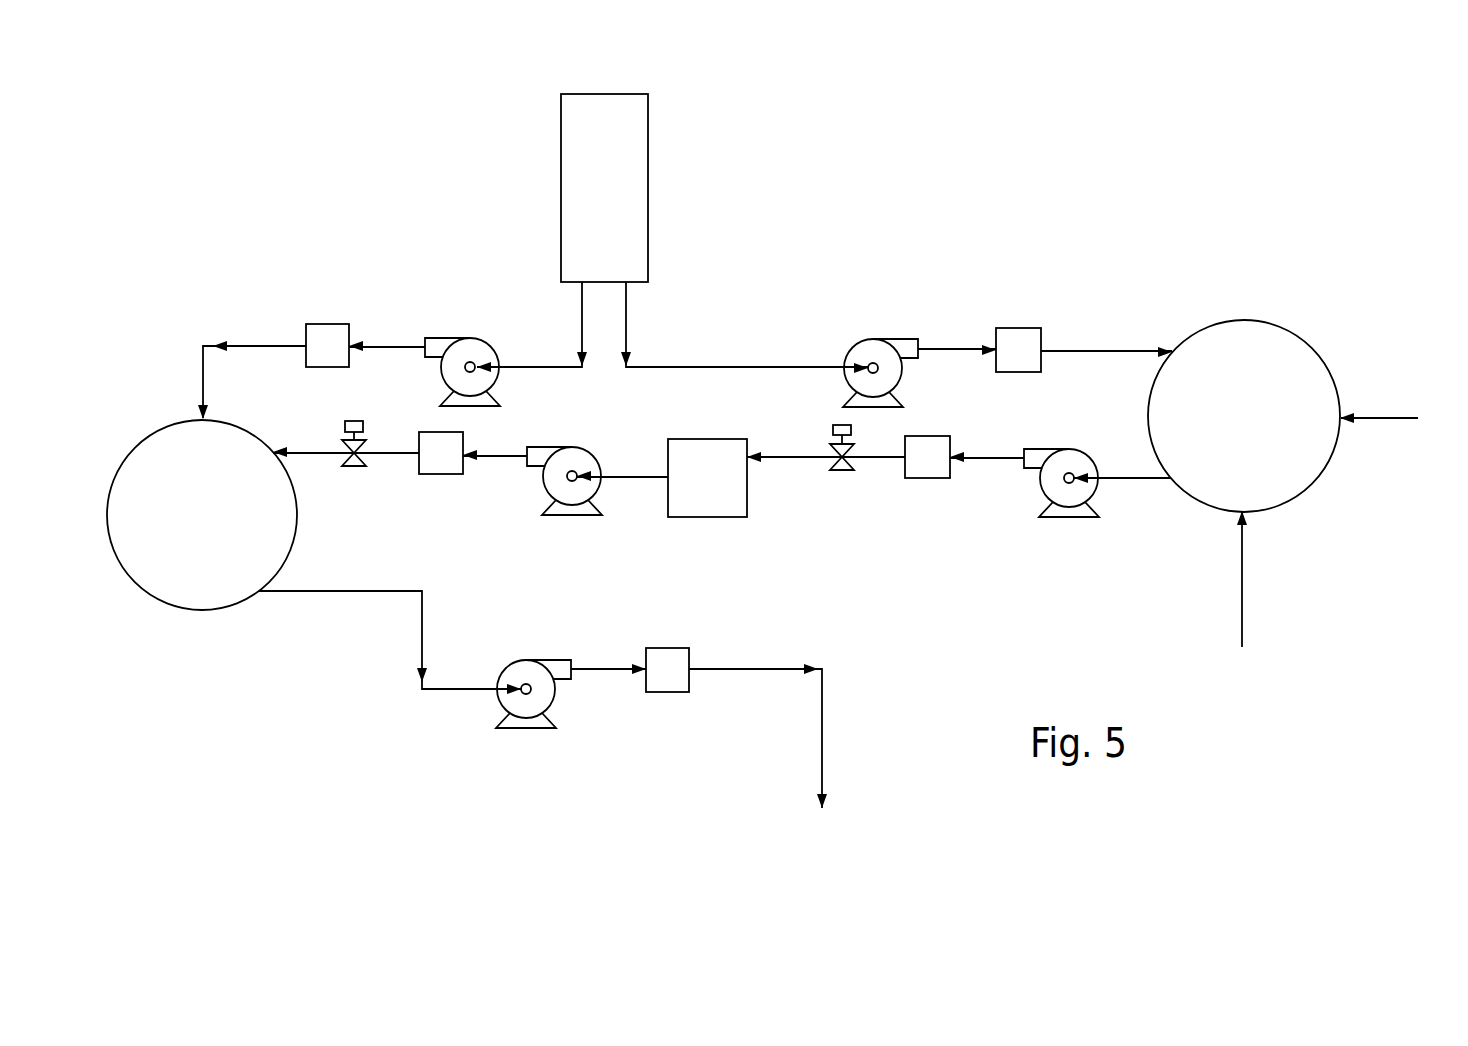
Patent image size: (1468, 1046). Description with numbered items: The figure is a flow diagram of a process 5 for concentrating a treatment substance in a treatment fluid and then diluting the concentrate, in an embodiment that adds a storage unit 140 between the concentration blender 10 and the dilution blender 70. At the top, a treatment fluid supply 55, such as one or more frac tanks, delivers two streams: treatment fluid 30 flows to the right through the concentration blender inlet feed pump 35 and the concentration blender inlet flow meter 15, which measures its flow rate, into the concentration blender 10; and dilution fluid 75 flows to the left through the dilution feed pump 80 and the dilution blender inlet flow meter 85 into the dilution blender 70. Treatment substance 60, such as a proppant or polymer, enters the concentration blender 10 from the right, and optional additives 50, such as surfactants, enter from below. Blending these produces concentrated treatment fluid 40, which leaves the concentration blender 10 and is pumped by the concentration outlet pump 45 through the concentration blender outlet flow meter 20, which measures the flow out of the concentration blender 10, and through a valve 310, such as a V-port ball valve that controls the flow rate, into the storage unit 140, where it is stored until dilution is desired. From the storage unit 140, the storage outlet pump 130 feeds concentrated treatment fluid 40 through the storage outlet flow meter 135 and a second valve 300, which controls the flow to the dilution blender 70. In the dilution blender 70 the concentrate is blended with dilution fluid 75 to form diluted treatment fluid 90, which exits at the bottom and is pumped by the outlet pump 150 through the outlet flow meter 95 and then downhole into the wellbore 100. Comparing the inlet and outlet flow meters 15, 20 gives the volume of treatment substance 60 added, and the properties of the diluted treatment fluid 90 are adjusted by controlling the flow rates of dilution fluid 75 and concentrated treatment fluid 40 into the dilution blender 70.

The process 5 is at (1072, 188).
The concentration blender 10 is at (1255, 321).
The concentration blender inlet flow meter 15 is at (1018, 328).
The concentration blender outlet flow meter 20 is at (927, 478).
The treatment fluid 30 is at (626, 320).
The concentration blender inlet feed pump 35 is at (887, 339).
The concentrated treatment fluid 40 is at (1148, 480).
The concentration outlet pump 45 is at (1050, 449).
The additives 50 is at (1242, 567).
The treatment fluid supply 55 is at (648, 151).
The treatment substance 60 is at (1378, 418).
The dilution blender 70 is at (192, 611).
The dilution fluid 75 is at (582, 322).
The dilution feed pump 80 is at (455, 338).
The dilution blender inlet flow meter 85 is at (330, 324).
The diluted treatment fluid 90 is at (422, 630).
The outlet flow meter 95 is at (672, 648).
The wellbore 100 is at (821, 824).
The storage outlet pump 130 is at (572, 447).
The storage outlet flow meter 135 is at (440, 474).
The storage unit 140 is at (703, 517).
The outlet pump 150 is at (535, 660).
The valve 300 is at (354, 421).
The valve 310 is at (842, 425).